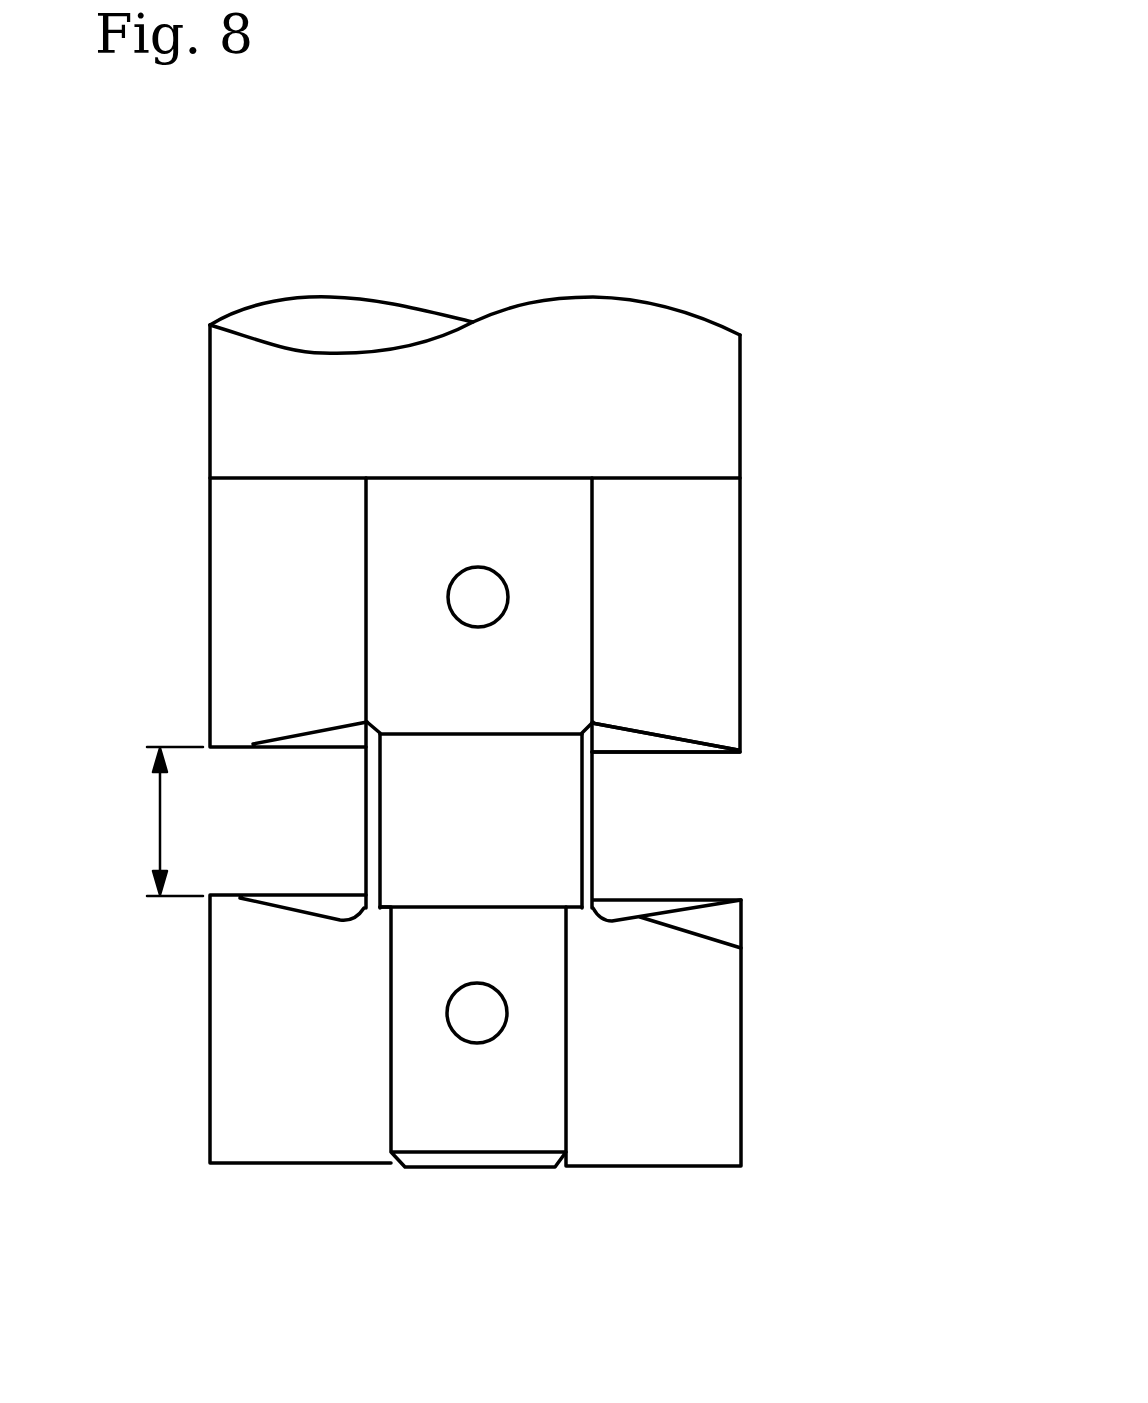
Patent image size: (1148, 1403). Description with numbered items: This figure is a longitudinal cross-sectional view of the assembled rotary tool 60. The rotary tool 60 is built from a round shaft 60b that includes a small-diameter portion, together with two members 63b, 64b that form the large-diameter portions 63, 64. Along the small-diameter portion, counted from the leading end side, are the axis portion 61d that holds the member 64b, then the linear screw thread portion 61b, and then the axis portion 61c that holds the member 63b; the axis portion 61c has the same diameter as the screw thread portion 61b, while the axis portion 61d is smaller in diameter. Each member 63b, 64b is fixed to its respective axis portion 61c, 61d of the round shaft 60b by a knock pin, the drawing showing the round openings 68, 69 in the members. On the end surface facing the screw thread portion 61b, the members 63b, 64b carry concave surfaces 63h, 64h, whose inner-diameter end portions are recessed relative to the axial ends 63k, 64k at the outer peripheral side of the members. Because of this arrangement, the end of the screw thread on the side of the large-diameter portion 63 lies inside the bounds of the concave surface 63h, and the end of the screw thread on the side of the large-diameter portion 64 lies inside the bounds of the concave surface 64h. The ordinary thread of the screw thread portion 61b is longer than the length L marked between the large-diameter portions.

The rotary tool 60 is at (534, 691).
The round shaft 60b is at (725, 405).
The screw thread portion 61b is at (595, 822).
The axis portion 61c is at (550, 693).
The axis portion 61d is at (540, 1037).
The large-diameter portion 63 is at (771, 641).
The member 63b is at (733, 641).
The concave surface 63h is at (663, 737).
The axial end 63k is at (741, 755).
The large-diameter portion 64 is at (750, 1008).
The member 64b is at (721, 1008).
The concave surface 64h is at (741, 948).
The axial end 64k is at (741, 900).
The upper hole 68 is at (503, 578).
The lower hole 69 is at (507, 945).